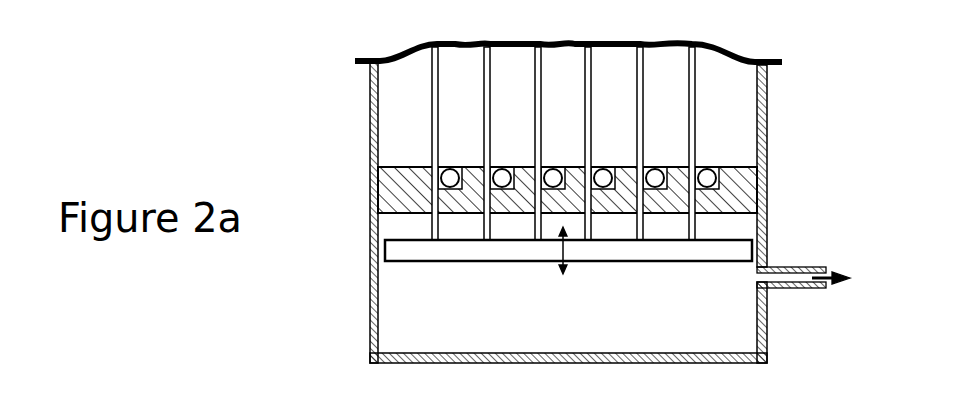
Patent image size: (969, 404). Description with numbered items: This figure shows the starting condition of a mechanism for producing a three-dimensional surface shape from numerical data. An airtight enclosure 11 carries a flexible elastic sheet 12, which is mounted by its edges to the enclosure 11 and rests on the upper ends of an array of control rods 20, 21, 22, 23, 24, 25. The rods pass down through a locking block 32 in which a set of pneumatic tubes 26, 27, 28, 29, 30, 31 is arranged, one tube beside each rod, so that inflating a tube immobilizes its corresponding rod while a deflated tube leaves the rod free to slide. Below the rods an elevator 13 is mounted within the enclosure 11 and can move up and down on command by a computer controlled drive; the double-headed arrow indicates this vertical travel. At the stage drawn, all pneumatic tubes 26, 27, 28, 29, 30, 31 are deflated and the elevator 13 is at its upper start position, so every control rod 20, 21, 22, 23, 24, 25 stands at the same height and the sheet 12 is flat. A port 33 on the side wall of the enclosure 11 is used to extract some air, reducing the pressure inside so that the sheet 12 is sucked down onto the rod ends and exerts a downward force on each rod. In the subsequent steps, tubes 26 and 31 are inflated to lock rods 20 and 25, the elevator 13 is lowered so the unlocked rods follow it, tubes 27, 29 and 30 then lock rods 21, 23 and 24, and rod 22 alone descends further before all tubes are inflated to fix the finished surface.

The enclosure 11 is at (368, 202).
The flexible elastic sheet 12 is at (412, 48).
The elevator 13 is at (500, 258).
The control rod 20 is at (432, 113).
The control rod 21 is at (483, 113).
The control rod 22 is at (535, 113).
The control rod 23 is at (585, 113).
The control rod 24 is at (637, 113).
The control rod 25 is at (688, 113).
The pneumatic tube 26 is at (453, 166).
The pneumatic tube 27 is at (503, 166).
The pneumatic tube 28 is at (555, 166).
The pneumatic tube 29 is at (607, 166).
The pneumatic tube 30 is at (658, 166).
The pneumatic tube 31 is at (710, 166).
The block 32 is at (733, 198).
The port 33 is at (808, 265).